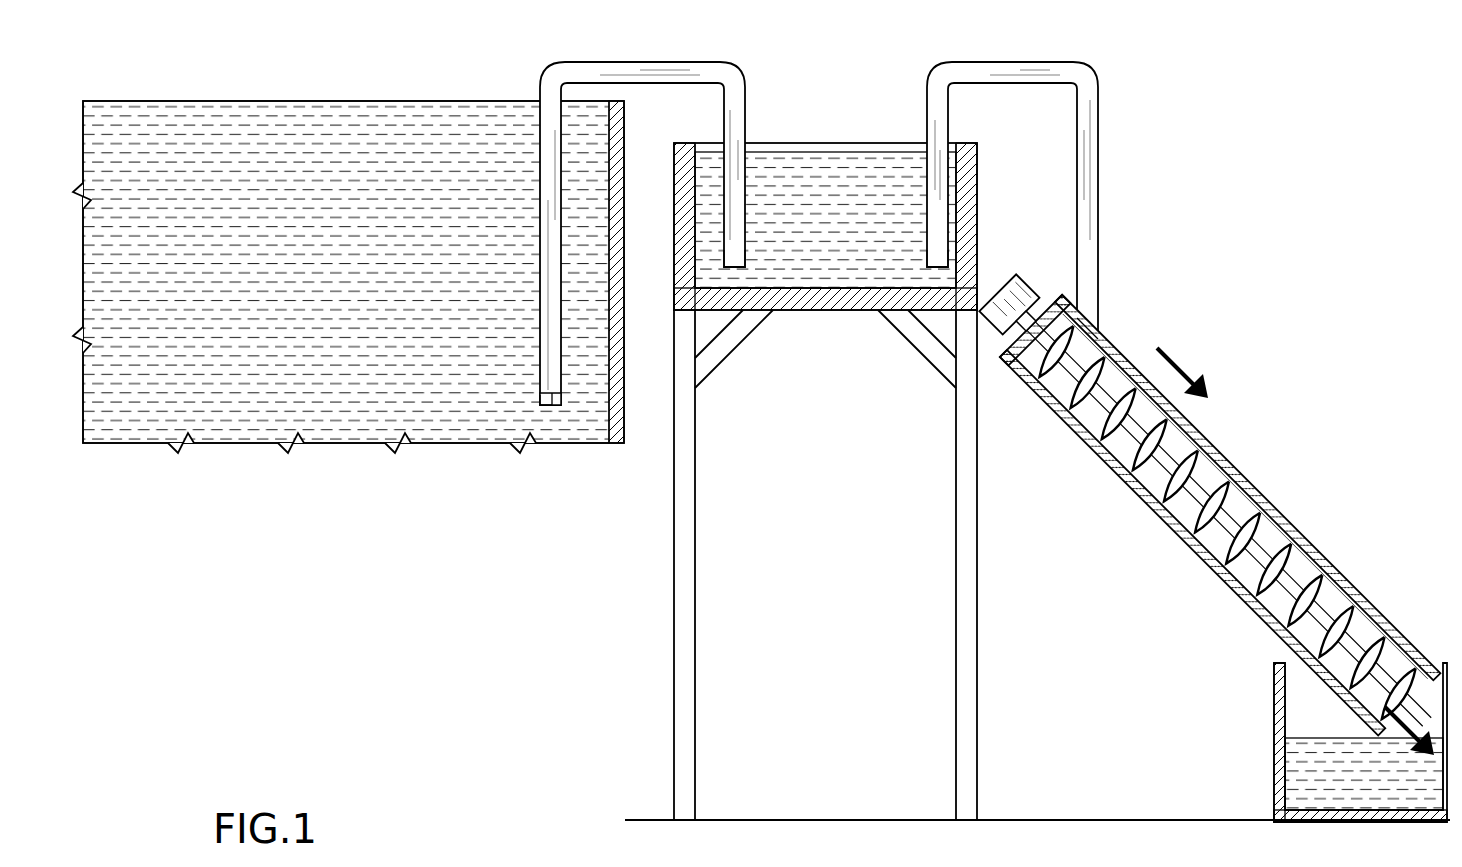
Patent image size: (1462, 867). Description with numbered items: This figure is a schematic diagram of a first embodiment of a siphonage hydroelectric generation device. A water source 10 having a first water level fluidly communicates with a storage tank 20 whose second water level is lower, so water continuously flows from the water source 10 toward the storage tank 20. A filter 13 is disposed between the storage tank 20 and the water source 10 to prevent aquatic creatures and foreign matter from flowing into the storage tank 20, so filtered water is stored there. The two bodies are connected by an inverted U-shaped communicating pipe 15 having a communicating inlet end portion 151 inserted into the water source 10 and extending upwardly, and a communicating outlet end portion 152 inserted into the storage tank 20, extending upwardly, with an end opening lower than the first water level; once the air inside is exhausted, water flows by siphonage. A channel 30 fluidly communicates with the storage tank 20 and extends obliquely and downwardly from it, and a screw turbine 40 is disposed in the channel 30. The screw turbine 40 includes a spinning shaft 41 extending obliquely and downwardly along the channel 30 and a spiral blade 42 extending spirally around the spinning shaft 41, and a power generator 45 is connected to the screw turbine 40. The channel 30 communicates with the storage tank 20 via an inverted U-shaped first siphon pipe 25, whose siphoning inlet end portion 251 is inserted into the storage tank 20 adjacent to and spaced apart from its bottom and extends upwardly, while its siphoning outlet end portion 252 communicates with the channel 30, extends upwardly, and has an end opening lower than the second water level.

The water source 10 is at (297, 93).
The filter 13 is at (540, 403).
The communicating pipe 15 is at (640, 267).
The communicating inlet end portion 151 is at (553, 405).
The communicating outlet end portion 152 is at (737, 270).
The storage tank 20 is at (825, 138).
The first siphon pipe 25 is at (964, 190).
The siphoning inlet end portion 251 is at (938, 272).
The siphoning outlet end portion 252 is at (1087, 335).
The channel 30 is at (1207, 455).
The screw turbine 40 is at (1277, 522).
The spinning shaft 41 is at (1217, 505).
The spiral blade 42 is at (1305, 600).
The power generator 45 is at (1044, 296).